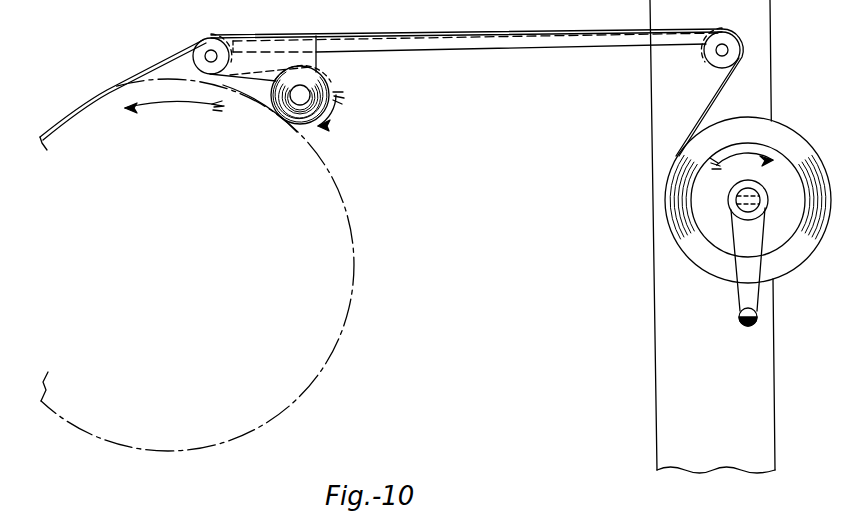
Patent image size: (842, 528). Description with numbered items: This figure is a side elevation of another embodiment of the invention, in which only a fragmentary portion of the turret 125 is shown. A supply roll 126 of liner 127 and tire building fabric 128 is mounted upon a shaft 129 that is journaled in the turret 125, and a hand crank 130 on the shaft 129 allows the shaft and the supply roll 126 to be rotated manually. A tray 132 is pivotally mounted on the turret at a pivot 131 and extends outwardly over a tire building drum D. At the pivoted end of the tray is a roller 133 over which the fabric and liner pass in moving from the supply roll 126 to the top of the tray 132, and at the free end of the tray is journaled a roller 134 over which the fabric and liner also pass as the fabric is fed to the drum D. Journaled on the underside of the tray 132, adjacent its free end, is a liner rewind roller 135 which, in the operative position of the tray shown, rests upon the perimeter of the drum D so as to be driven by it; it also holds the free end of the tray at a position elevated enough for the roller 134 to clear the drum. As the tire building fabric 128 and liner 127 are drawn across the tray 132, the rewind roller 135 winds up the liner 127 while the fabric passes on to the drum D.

The turret 125 is at (665, 382).
The supply roll 126 is at (712, 233).
The liner 127 is at (708, 111).
The tire building fabric 128 is at (718, 100).
The shaft 129 is at (752, 196).
The hand crank 130 is at (752, 300).
The pivot 131 is at (717, 51).
The tray 132 is at (468, 53).
The roller 133 is at (716, 67).
The roller 134 is at (191, 47).
The liner rewind roller 135 is at (330, 96).
The tire building drum D is at (353, 275).